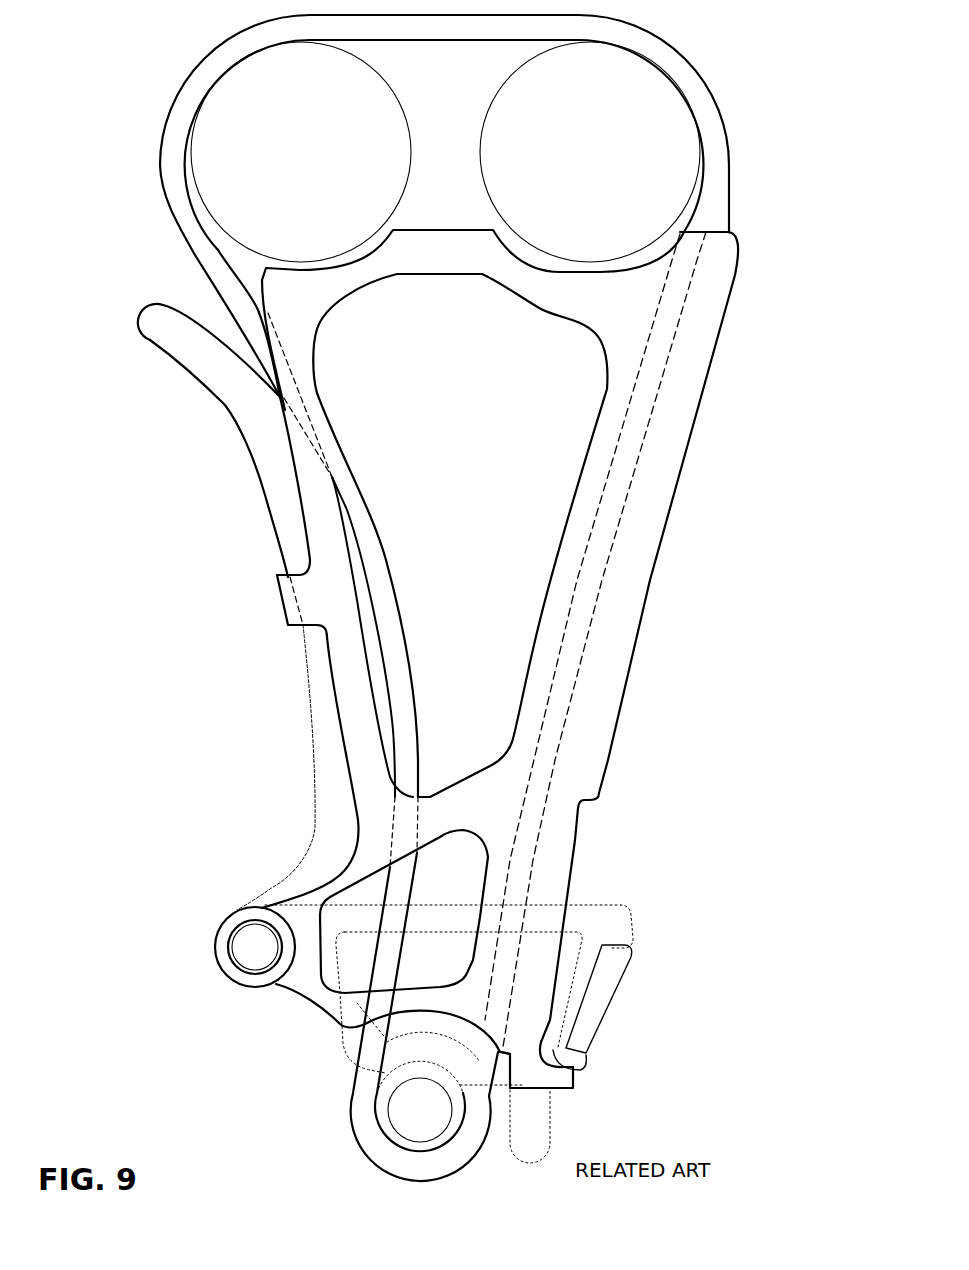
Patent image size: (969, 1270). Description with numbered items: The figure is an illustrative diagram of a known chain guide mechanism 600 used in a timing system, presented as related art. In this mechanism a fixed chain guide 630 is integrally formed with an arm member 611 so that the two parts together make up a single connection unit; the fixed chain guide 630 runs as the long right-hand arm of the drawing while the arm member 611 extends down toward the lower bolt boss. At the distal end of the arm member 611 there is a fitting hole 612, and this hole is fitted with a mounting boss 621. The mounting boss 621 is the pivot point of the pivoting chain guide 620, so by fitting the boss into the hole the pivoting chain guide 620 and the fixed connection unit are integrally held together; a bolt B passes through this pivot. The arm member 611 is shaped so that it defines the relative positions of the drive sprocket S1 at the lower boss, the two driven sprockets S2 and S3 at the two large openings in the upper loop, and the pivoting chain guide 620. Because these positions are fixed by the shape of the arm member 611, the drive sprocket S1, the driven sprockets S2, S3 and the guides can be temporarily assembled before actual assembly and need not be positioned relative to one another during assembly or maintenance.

The chain guide mechanism 600 is at (198, 489).
The arm member 611 is at (403, 820).
The fitting hole 612 is at (250, 967).
The pivoting chain guide 620 is at (330, 765).
The mounting boss 621 is at (225, 950).
The fixed chain guide 630 is at (637, 548).
The bolt B is at (250, 937).
The drive sprocket S1 is at (412, 1113).
The driven sprocket S2 is at (218, 111).
The driven sprocket S3 is at (663, 110).